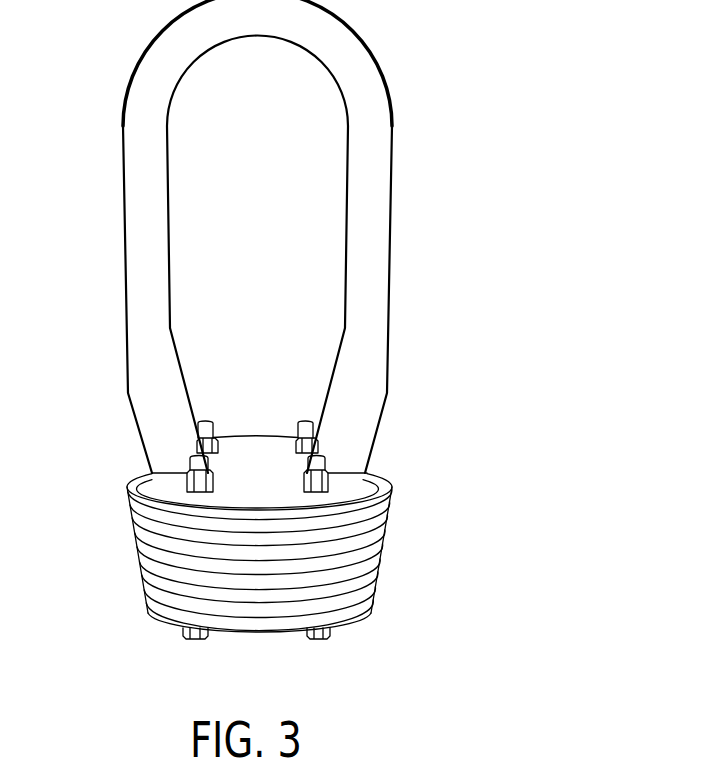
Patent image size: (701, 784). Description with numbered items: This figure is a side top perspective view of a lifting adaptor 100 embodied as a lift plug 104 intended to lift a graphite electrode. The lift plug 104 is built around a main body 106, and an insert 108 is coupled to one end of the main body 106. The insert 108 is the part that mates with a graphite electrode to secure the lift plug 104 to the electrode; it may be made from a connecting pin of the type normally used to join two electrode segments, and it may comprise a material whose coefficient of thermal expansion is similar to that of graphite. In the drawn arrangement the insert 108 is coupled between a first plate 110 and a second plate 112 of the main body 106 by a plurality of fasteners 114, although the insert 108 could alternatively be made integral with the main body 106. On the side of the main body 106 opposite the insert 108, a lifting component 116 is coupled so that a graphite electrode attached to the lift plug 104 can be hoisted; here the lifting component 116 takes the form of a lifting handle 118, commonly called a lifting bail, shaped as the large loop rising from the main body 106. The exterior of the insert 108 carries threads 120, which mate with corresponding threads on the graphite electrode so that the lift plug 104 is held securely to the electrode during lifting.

The lifting adaptor 100 is at (281, 347).
The lift plug 104 is at (271, 246).
The lifting component 116 is at (143, 130).
The lifting handle 118 is at (143, 183).
The main body 106 is at (357, 483).
The first plate 110 is at (158, 483).
The insert 108 is at (357, 552).
The second plate 112 is at (172, 632).
The fasteners 114 is at (313, 640).
The threads 120 is at (258, 571).